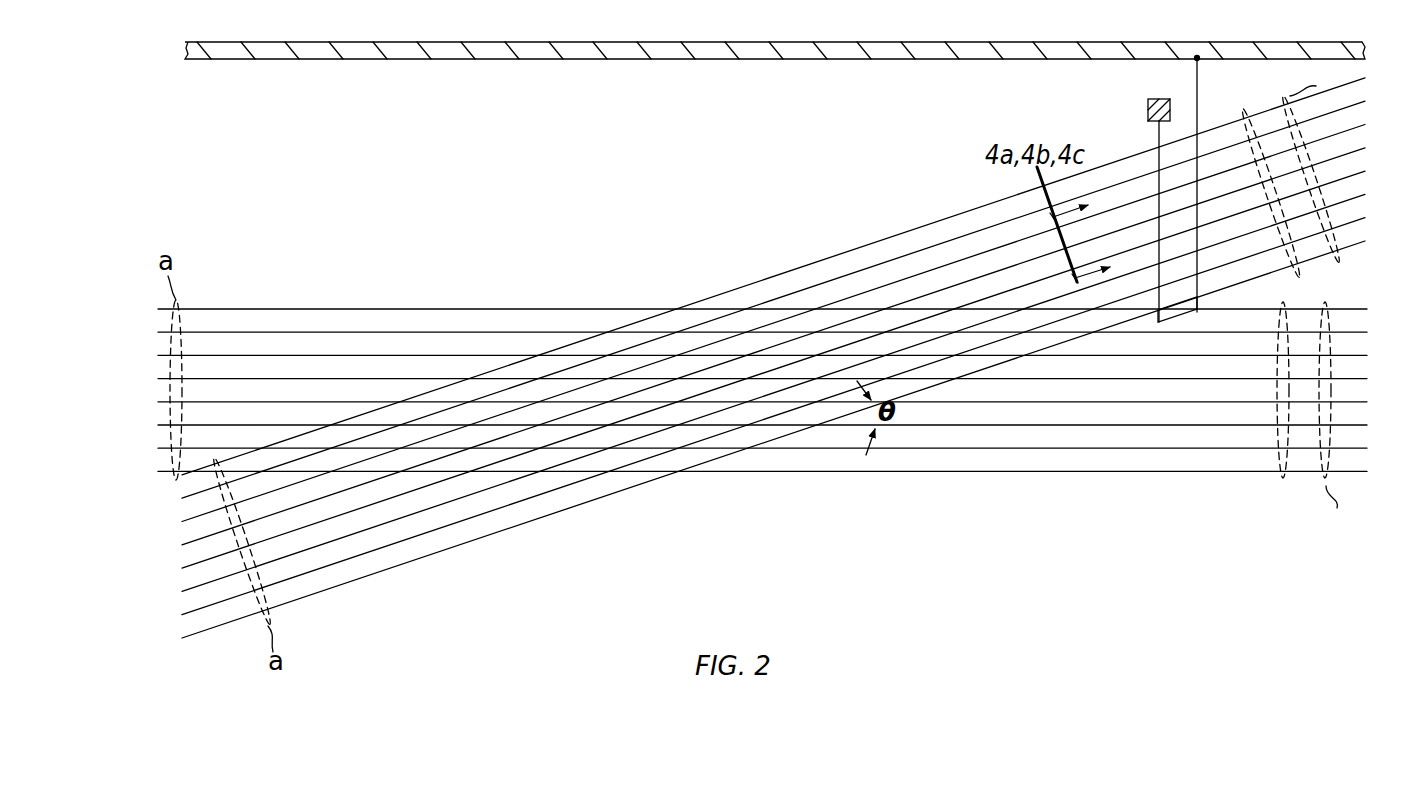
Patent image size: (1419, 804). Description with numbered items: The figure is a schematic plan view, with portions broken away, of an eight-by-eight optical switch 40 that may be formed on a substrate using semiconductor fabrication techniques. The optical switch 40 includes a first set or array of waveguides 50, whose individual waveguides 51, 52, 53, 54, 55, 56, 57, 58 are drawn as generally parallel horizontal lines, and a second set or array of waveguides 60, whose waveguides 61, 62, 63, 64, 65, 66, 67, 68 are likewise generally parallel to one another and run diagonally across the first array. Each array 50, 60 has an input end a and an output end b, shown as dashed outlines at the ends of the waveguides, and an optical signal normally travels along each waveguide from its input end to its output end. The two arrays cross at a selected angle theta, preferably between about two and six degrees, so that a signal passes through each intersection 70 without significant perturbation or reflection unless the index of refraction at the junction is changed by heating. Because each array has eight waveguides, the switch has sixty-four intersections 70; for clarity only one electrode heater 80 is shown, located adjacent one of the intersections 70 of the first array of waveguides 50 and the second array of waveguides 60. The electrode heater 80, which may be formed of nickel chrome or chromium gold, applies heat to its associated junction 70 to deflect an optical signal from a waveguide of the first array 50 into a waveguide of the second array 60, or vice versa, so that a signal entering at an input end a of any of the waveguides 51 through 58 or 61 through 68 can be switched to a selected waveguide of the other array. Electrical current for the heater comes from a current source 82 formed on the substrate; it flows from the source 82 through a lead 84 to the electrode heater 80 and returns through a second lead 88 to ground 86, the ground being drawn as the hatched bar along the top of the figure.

The optical switch 40 is at (757, 409).
The first set or array of waveguides 50 is at (1285, 488).
The waveguide 51 is at (1362, 471).
The waveguide 52 is at (163, 448).
The waveguide 53 is at (1362, 425).
The waveguide 54 is at (163, 402).
The waveguide 55 is at (1362, 379).
The waveguide 56 is at (163, 355).
The waveguide 57 is at (1362, 332).
The waveguide 58 is at (163, 309).
The second set or array of waveguides 60 is at (1252, 96).
The waveguide 61 is at (205, 631).
The waveguide 62 is at (1358, 218).
The waveguide 63 is at (205, 584).
The waveguide 64 is at (1358, 171).
The waveguide 65 is at (205, 538).
The waveguide 66 is at (1358, 124).
The waveguide 67 is at (205, 491).
The waveguide 68 is at (1358, 77).
The intersection 70 is at (538, 378).
The electrode heater 80 is at (1207, 303).
The current source 82 is at (1148, 107).
The lead 84 is at (1159, 134).
The ground 86 is at (880, 46).
The lead 88 is at (1197, 82).